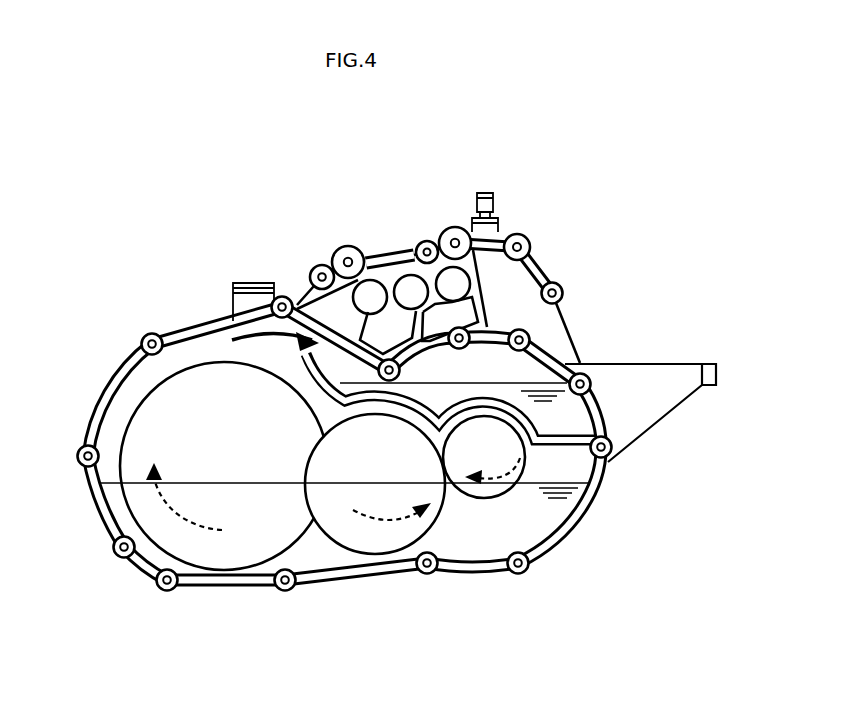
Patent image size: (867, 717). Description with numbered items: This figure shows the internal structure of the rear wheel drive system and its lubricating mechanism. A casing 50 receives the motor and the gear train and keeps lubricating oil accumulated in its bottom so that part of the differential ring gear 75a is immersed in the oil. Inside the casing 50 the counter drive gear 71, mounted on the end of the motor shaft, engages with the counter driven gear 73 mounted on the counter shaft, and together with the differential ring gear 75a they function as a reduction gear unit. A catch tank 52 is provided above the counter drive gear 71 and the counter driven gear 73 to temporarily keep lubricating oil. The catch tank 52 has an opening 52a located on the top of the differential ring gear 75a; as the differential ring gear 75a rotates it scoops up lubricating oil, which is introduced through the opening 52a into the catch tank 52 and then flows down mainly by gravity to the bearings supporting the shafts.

The casing 50 is at (540, 272).
The catch tank 52 is at (503, 394).
The opening 52a is at (290, 300).
The counter drive gear 71 is at (483, 499).
The counter driven gear 73 is at (382, 556).
The differential ring gear 75a is at (253, 568).